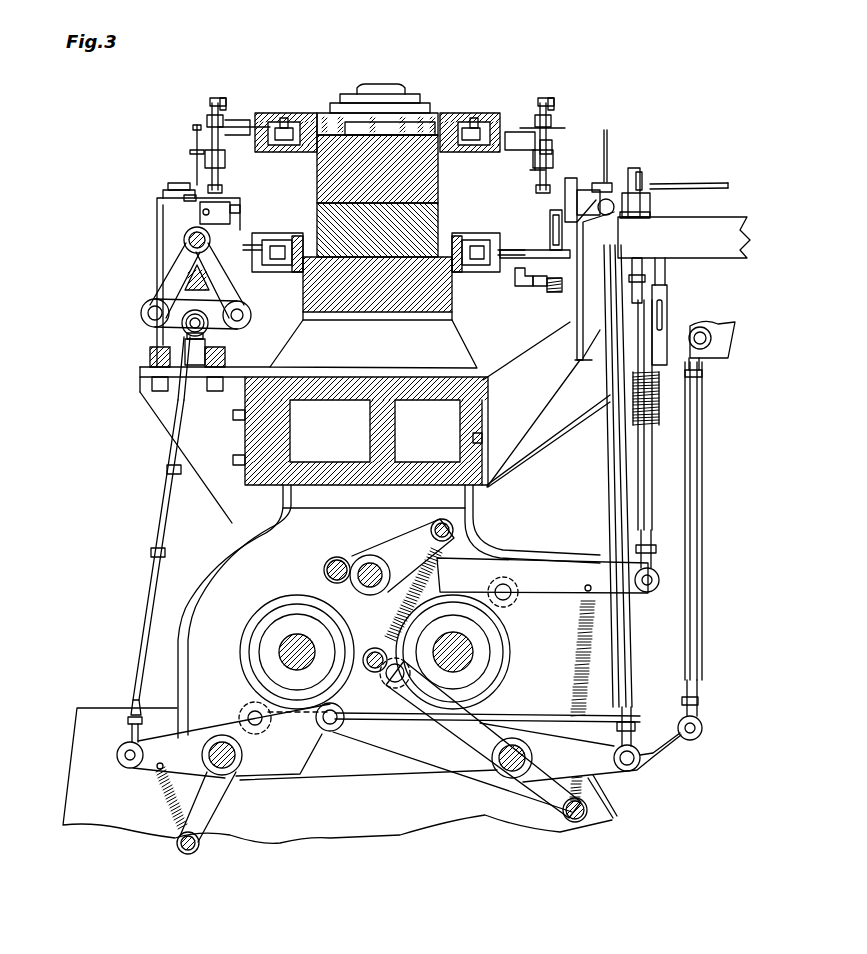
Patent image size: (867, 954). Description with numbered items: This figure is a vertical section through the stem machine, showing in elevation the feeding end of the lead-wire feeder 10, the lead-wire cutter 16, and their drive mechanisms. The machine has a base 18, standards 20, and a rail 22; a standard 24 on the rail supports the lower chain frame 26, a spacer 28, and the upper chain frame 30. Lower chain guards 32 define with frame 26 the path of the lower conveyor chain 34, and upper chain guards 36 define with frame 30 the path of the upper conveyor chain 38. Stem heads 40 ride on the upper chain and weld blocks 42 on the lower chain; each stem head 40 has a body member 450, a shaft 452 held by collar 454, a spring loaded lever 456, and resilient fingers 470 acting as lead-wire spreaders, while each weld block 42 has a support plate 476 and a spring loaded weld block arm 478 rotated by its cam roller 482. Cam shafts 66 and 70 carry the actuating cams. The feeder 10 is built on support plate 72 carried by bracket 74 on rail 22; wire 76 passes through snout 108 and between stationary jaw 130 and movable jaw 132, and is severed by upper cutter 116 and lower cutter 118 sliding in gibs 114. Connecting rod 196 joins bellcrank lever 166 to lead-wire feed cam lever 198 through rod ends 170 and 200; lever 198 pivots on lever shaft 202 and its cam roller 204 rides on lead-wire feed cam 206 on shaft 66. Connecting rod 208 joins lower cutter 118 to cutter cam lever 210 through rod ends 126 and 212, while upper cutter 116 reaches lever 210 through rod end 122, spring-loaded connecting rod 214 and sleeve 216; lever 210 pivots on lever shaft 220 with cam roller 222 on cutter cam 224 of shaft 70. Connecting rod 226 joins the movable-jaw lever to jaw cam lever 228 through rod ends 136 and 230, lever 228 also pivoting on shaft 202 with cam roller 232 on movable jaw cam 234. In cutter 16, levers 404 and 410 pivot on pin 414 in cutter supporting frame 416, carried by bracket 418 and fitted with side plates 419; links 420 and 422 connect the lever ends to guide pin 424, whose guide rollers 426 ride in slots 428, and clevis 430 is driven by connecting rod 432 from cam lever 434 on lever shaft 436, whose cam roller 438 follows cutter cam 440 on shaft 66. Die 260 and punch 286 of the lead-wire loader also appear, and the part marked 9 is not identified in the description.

The valve stem tip 9 is at (189, 198).
The lead-wire feeder 10 is at (718, 165).
The lead-wire cutter 16 is at (153, 189).
The base 18 is at (72, 733).
The standards 20 is at (236, 549).
The rail 22 is at (382, 457).
The standard 24 is at (455, 340).
The lower chain frame 26 is at (320, 294).
The spacer 28 is at (435, 212).
The upper chain frame 30 is at (322, 177).
The lower chain guards 32 is at (294, 233).
The lower conveyor chain 34 is at (264, 248).
The upper chain guards 36 is at (310, 112).
The upper conveyor chain 38 is at (282, 121).
The stem heads 40 is at (206, 107).
The weld blocks 42 is at (546, 300).
The cam shaft 66 is at (288, 654).
The cam shaft 70 is at (461, 664).
The support plate 72 is at (720, 255).
The bracket 74 is at (556, 420).
The wire 76 is at (638, 175).
The snout 108 is at (708, 182).
The gibs 114 is at (648, 200).
The upper cutter 116 is at (642, 180).
The lower cutter 118 is at (632, 220).
The rod end 122 is at (643, 268).
The rod end 126 is at (661, 278).
The stationary jaw 130 is at (580, 190).
The movable jaw 132 is at (570, 178).
The rod end 136 is at (602, 222).
The bellcrank lever 166 is at (713, 352).
The rod end 170 is at (704, 378).
The connecting rod 196 is at (701, 500).
The lead-wire feed cam lever 198 is at (665, 748).
The rod end 200 is at (696, 714).
The lever shaft 202 is at (505, 778).
The cam roller 204 is at (248, 710).
The lead-wire feed cam 206 is at (255, 640).
The connecting rod 208 is at (645, 481).
The cutter cam lever 210 is at (556, 560).
The rod end 212 is at (650, 566).
The spring-loaded connecting rod 214 is at (650, 426).
The sleeve 216 is at (668, 320).
The lever shaft 220 is at (373, 561).
The cam roller 222 is at (508, 601).
The cutter cam 224 is at (502, 648).
The connecting rod 226 is at (614, 495).
The jaw cam lever 228 is at (600, 768).
The rod end 230 is at (632, 740).
The cam roller 232 is at (396, 684).
The movable jaw cam 234 is at (490, 668).
The die 260 is at (606, 175).
The punch 286 is at (603, 183).
The lever 404 is at (172, 222).
The lever 410 is at (222, 228).
The pin 414 is at (188, 240).
The cutter supporting frame 416 is at (210, 331).
The bracket 418 is at (168, 398).
The plates 419 is at (160, 256).
The link 420 is at (160, 302).
The link 422 is at (230, 302).
The guide pin 424 is at (183, 332).
The guide rollers 426 is at (148, 318).
The slots 428 is at (206, 341).
The clevis 430 is at (186, 385).
The connecting rod 432 is at (158, 497).
The cam lever 434 is at (136, 771).
The lever shaft 436 is at (242, 765).
The cam roller 438 is at (333, 733).
The cutter cam 440 is at (282, 600).
The body member 450 is at (533, 143).
The shaft 452 is at (536, 166).
The collar 454 is at (548, 148).
The spring loaded lever 456 is at (238, 91).
The resilient fingers 470 is at (192, 163).
The weld block support plate 476 is at (532, 248).
The weld block arm 478 is at (540, 286).
The cam roller 482 is at (516, 284).